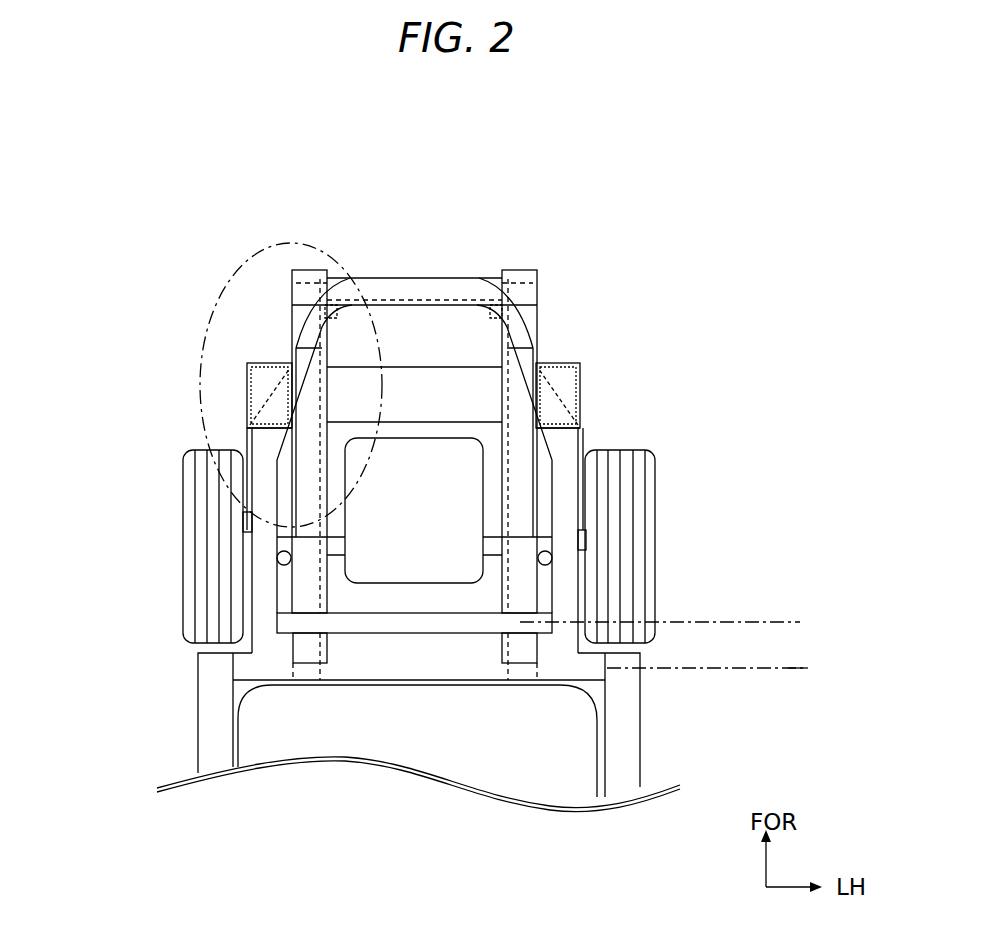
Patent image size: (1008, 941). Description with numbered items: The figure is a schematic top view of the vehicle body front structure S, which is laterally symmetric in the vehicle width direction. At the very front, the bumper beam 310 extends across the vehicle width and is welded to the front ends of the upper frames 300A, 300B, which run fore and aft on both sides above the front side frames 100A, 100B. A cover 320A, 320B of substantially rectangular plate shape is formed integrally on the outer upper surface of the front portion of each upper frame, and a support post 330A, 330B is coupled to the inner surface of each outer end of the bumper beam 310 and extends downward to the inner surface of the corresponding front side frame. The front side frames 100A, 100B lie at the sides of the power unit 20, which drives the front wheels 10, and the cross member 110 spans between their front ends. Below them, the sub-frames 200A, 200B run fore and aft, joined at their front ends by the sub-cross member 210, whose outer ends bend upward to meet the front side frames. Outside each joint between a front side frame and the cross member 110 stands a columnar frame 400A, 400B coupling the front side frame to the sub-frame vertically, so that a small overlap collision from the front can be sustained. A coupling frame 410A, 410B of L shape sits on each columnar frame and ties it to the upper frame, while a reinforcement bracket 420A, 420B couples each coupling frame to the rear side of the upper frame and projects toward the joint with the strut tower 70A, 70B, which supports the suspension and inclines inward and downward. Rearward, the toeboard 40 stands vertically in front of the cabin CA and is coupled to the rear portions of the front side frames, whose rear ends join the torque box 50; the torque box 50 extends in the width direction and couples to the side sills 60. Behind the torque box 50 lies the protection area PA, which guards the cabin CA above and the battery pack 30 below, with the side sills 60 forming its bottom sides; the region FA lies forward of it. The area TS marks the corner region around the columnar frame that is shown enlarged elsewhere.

The front wheels 10 is at (193, 572).
The power unit 20 is at (366, 564).
The battery pack 30 is at (404, 742).
The toeboard 40 is at (353, 625).
The torque box 50 is at (277, 662).
The side sills 60 is at (213, 745).
The strut tower 70A is at (283, 601).
The strut tower 70B is at (545, 587).
The front side frame 100A is at (303, 498).
The front side frame 100B is at (523, 528).
The cross member 110 is at (450, 383).
The sub-frame 200A is at (303, 463).
The sub-frame 200B is at (523, 500).
The sub-cross member 210 is at (334, 273).
The upper frame 300A is at (262, 543).
The upper frame 300B is at (565, 568).
The bumper beam 310 is at (424, 293).
The cover 320A is at (260, 407).
The cover 320B is at (567, 393).
The support post 330A is at (328, 306).
The support post 330B is at (495, 305).
The columnar frame 400A is at (270, 397).
The columnar frame 400B is at (580, 380).
The coupling frame 410A is at (248, 364).
The coupling frame 410B is at (580, 365).
The reinforcement bracket 420A is at (250, 430).
The reinforcement bracket 420B is at (582, 432).
The area TS is at (216, 290).
The vehicle body front structure S is at (786, 152).
The cabin CA is at (718, 623).
The front area FA is at (797, 666).
The protection area PA is at (797, 670).